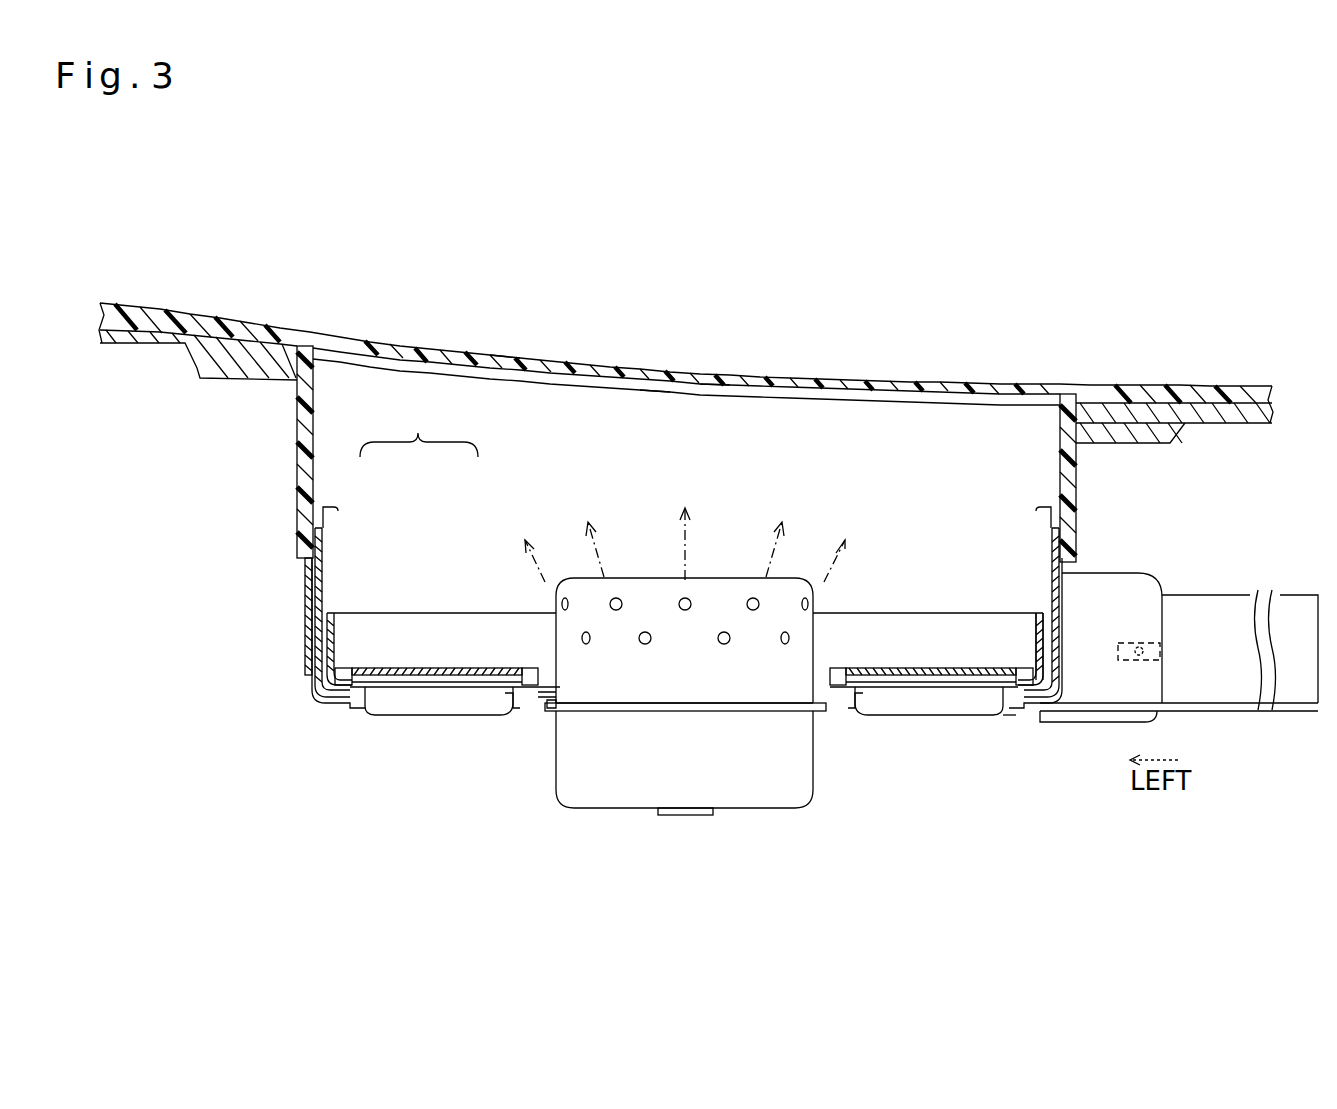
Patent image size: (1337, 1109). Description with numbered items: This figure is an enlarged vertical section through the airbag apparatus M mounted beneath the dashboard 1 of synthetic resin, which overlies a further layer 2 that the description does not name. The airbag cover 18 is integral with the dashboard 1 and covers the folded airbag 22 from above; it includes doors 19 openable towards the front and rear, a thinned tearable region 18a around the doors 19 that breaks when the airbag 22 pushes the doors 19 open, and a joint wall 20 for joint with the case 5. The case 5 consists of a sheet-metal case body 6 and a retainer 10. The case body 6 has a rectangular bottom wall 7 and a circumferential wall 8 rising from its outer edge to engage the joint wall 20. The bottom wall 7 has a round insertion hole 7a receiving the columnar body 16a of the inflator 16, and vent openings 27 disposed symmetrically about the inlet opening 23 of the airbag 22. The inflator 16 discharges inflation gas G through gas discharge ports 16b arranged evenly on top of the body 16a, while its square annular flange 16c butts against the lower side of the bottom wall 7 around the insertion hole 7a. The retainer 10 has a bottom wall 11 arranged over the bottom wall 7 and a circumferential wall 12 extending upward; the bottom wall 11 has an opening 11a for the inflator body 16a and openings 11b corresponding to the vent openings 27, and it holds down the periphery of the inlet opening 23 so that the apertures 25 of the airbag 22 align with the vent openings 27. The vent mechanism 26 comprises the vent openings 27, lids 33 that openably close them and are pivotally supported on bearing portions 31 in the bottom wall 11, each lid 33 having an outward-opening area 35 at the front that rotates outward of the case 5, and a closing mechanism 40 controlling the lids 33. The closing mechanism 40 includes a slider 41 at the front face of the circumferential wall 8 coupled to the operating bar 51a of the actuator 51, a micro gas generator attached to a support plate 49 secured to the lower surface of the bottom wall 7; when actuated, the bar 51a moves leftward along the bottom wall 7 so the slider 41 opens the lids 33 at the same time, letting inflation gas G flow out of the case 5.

The dashboard 1 is at (148, 318).
The panel inner layer 2 is at (212, 332).
The case 5 is at (419, 427).
The case body 6 is at (323, 562).
The bottom wall 7 is at (330, 706).
The insertion hole 7a is at (564, 712).
The circumferential wall 8 is at (306, 626).
The retainer 10 is at (335, 643).
The bottom wall 11 is at (1023, 693).
The opening 11a is at (773, 710).
The openings 11b is at (360, 697).
The circumferential wall 12 is at (1035, 637).
The inflator 16 is at (682, 760).
The columnar body 16a is at (733, 793).
The gas discharge ports 16b is at (648, 643).
The flange 16c is at (663, 712).
The airbag cover 18 is at (540, 344).
The tearable region 18a is at (654, 388).
The doors 19 is at (707, 378).
The joint wall 20 is at (304, 452).
The airbag 22 is at (1053, 535).
The inlet opening 23 is at (786, 711).
The apertures 25 is at (380, 716).
The vent mechanism 26 is at (1013, 753).
The vent openings 27 is at (510, 716).
The bearing portion 31 is at (314, 697).
The lids 33 is at (441, 716).
The outward-opening area 35 is at (920, 716).
The closing mechanism 40 is at (1183, 650).
The slider 41 is at (1120, 603).
The support plate 49 is at (1195, 714).
The actuator 51 is at (1294, 622).
The operating bar 51a is at (1160, 651).
The inflation gas G is at (685, 530).
The airbag apparatus M is at (228, 777).